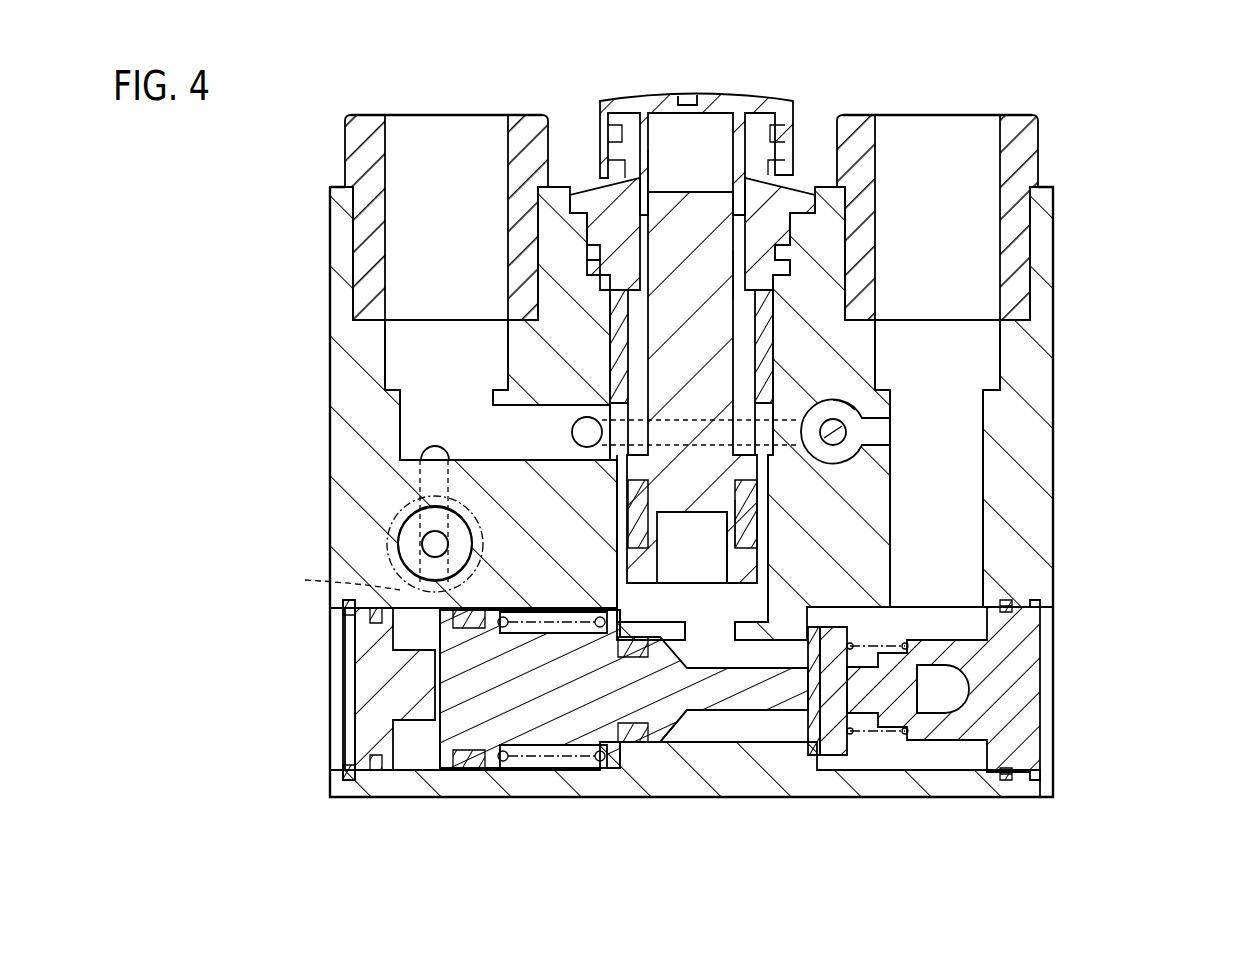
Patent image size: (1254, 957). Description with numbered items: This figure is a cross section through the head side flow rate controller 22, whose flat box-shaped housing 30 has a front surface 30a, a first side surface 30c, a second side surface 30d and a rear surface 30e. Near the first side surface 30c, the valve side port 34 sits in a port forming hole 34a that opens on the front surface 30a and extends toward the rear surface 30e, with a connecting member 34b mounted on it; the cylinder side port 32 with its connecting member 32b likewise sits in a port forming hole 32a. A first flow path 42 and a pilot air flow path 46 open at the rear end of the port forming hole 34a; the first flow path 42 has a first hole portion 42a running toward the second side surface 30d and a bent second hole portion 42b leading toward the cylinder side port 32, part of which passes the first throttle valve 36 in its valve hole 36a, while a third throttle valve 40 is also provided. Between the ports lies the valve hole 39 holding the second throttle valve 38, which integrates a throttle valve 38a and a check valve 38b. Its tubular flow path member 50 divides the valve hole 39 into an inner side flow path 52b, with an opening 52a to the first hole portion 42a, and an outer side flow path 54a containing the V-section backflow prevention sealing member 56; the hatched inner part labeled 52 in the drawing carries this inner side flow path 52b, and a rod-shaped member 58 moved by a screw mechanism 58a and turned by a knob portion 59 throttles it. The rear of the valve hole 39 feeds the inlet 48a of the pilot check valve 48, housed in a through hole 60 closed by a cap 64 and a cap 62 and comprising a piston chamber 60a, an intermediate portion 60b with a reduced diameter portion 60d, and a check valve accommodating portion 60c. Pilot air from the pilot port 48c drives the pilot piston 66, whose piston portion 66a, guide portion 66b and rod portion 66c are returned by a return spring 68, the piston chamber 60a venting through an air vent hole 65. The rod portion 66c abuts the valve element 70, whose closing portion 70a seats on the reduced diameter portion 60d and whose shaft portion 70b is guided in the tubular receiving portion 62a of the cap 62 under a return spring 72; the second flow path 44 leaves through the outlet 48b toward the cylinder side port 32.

The head side flow rate controller 22 is at (1080, 125).
The housing 30 is at (1040, 380).
The front surface 30a is at (818, 185).
The first side surface 30c is at (330, 478).
The second side surface 30d is at (1053, 482).
The rear surface 30e is at (366, 800).
The cylinder side port 32 is at (949, 205).
The port forming hole 32a is at (998, 357).
The connecting member 32b is at (1013, 128).
The valve side port 34 is at (450, 205).
The port forming hole 34a is at (385, 355).
The connecting member 34b is at (362, 125).
The first throttle valve 36 is at (849, 465).
The valve hole 36a is at (842, 405).
The second throttle valve 38 is at (765, 97).
The throttle valve 38a is at (683, 166).
The check valve 38b is at (784, 524).
The valve hole 39 is at (615, 350).
The third throttle valve 40 is at (398, 542).
The first flow path 42 is at (595, 508).
The first hole portion 42a is at (518, 445).
The second hole portion 42b is at (600, 452).
The second flow path 44 is at (947, 491).
The pilot air flow path 46 is at (433, 446).
The pilot check valve 48 is at (697, 745).
The inlet 48a is at (726, 627).
The outlet 48b is at (963, 606).
The pilot port 48c is at (375, 630).
The flow path member 50 is at (598, 192).
The piston 52 is at (665, 310).
The opening 52a is at (640, 415).
The inner side flow path 52b is at (690, 578).
The outer side flow path 54a is at (608, 553).
The backflow prevention sealing member 56 is at (760, 500).
The rod-shaped member 58 is at (688, 212).
The screw mechanism 58a is at (692, 300).
The knob portion 59 is at (686, 100).
The through hole 60 is at (418, 772).
The piston chamber 60a is at (486, 768).
The intermediate portion 60b is at (736, 745).
The check valve accommodating portion 60c is at (1003, 776).
The reduced diameter portion 60d is at (812, 758).
The cap 62 is at (1015, 680).
The tubular receiving portion 62a is at (975, 698).
The cap 64 is at (365, 708).
The air vent hole 65 is at (580, 700).
The pilot piston 66 is at (548, 715).
The piston portion 66a is at (462, 715).
The guide portion 66b is at (663, 748).
The rod portion 66c is at (757, 672).
The return spring 68 is at (610, 768).
The valve element 70 is at (859, 757).
The closing portion 70a is at (830, 760).
The shaft portion 70b is at (880, 760).
The return spring 72 is at (818, 634).